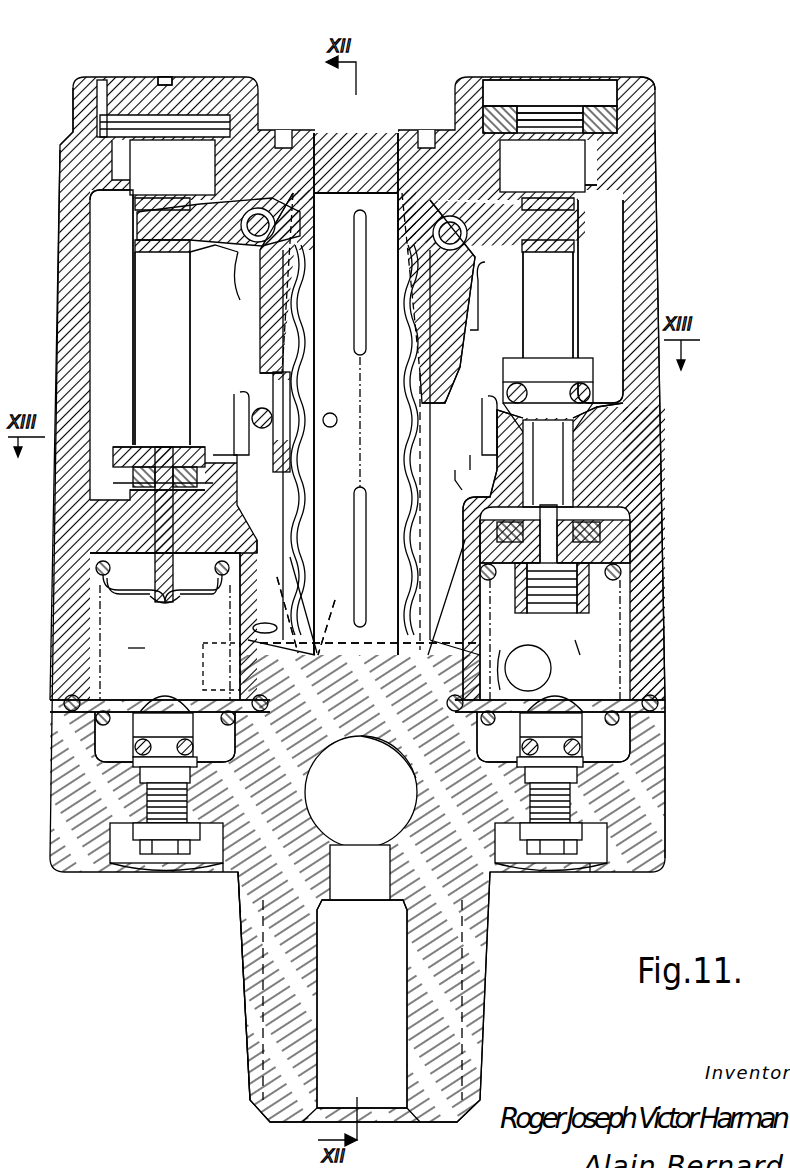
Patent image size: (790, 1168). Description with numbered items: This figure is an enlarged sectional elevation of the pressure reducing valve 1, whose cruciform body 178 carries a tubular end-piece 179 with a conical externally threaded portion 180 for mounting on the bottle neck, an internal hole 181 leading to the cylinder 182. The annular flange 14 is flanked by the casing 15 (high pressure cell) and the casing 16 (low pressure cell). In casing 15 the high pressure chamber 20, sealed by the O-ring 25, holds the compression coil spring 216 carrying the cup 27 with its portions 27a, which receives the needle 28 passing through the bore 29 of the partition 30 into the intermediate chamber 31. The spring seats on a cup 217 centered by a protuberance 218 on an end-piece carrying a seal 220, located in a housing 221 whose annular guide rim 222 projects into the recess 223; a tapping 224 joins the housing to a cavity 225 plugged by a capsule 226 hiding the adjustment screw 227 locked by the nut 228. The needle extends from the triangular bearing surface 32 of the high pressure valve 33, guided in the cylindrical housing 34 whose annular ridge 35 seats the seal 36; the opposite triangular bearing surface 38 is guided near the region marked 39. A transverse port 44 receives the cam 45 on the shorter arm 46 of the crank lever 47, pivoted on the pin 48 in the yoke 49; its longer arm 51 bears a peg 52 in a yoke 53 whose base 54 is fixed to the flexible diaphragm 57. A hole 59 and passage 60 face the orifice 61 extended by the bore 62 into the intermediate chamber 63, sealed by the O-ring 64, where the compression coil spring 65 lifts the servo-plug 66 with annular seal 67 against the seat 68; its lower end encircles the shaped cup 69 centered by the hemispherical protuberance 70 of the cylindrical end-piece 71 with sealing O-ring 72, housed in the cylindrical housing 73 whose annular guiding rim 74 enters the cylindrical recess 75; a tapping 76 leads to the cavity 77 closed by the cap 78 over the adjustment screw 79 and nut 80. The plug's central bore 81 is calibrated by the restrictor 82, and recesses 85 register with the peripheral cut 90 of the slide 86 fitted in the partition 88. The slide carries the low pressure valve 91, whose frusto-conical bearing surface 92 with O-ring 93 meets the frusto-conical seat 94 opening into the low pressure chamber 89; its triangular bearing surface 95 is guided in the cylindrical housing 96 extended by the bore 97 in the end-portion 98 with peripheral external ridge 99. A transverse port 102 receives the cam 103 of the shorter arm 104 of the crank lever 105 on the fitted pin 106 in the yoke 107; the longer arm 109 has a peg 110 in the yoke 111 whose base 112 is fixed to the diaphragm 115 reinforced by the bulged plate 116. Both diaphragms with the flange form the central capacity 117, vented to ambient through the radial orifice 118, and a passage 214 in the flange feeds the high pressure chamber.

The pressure reducing valve 1 is at (167, 78).
The cap slot 39 is at (98, 137).
The casing 15 is at (62, 194).
The triangular bearing surface 38 is at (172, 167).
The yoke 49 is at (283, 130).
The annular flange 14 is at (320, 132).
The yoke 107 is at (425, 130).
The bore 97 is at (503, 80).
The peripheral external ridge 99 is at (640, 80).
The end-portion 98 is at (620, 112).
The cylindrical housing 96 is at (598, 157).
The triangular bearing surface 95 is at (542, 166).
The cam 103 is at (565, 207).
The casing 16 is at (657, 210).
The transverse port 102 is at (565, 240).
The pin 48 is at (276, 222).
The fitted pin 106 is at (432, 230).
The shorter arm 104 is at (482, 262).
The crank lever 105 is at (480, 282).
The cam 45 is at (137, 232).
The transverse port 44 is at (137, 250).
The shorter arm 46 is at (212, 250).
The crank lever 47 is at (232, 272).
The longer arm 51 is at (262, 290).
The intermediate chamber 31 is at (111, 317).
The high pressure valve 33 is at (162, 348).
The central capacity 117 is at (374, 262).
The bulged plate 116 is at (410, 290).
The low pressure valve 91 is at (548, 305).
The low pressure chamber 89 is at (600, 301).
The longer arm 109 is at (468, 335).
The frusto-conical bearing surface 92 is at (548, 365).
The O-ring 93 is at (585, 383).
The frusto-conical seat 94 is at (590, 405).
The peg 110 is at (490, 400).
The peripheral cut 90 is at (548, 425).
The partition 88 is at (625, 430).
The slide 86 is at (570, 470).
The seat 68 is at (615, 525).
The central bore 81 is at (600, 535).
The servo-plug 66 is at (580, 570).
The compression coil spring 65 is at (625, 585).
The restrictor or jet 82 is at (632, 625).
The shaped cup 69 is at (560, 680).
The O-ring 64 is at (645, 695).
The cylindrical recess 75 is at (630, 725).
The sealing O-ring 72 is at (590, 745).
The cylindrical housing 73 is at (585, 772).
The tapping 76 is at (575, 800).
The adjustment screw 79 is at (610, 830).
The cavity 77 is at (520, 865).
The nut 80 is at (550, 865).
The cap 78 is at (590, 868).
The peg 52 is at (258, 412).
The yoke 53 is at (238, 408).
The cylindrical housing 34 is at (222, 452).
The triangular bearing surface 32 is at (120, 445).
The seal 36 is at (150, 472).
The partition 30 is at (110, 495).
The bore 29 is at (135, 530).
The annular ridge 35 is at (175, 498).
The base 54 is at (273, 468).
The radial orifice 118 is at (330, 413).
The yoke 111 is at (469, 467).
The base 112 is at (459, 486).
The annular seal 67 is at (465, 525).
The recesses 85 is at (500, 540).
The compression coil spring 216 is at (98, 570).
The bearings 27a is at (173, 569).
The needle 28 is at (163, 603).
The cup 27 is at (178, 602).
The high pressure chamber 20 is at (165, 626).
The cup 217 is at (135, 650).
The protuberance 218 is at (165, 680).
The passage 214 is at (165, 700).
The passage 60 is at (290, 600).
The hole 59 is at (267, 613).
The flexible diaphragm 57 is at (302, 620).
The orifice 61 is at (335, 627).
The diaphragm 115 is at (346, 590).
The bore 62 is at (405, 630).
The cylindrical end-piece 71 is at (490, 668).
The hemispherical protuberance 70 is at (552, 645).
The intermediate chamber 63 is at (591, 655).
The O-ring 25 is at (52, 700).
The recess 223 is at (95, 724).
The annular guide rim 222 is at (135, 745).
The seal 220 is at (133, 762).
The housing 221 is at (140, 778).
The tapping 224 is at (147, 800).
The adjustment screw 227 is at (125, 832).
The nut 228 is at (90, 872).
The capsule 226 is at (140, 860).
The cavity 225 is at (178, 860).
The cruciform body 178 is at (225, 872).
The cylinder 182 is at (361, 792).
The annular guiding rim 74 is at (414, 762).
The internal hole 181 is at (360, 872).
The tubular end-piece 179 is at (470, 990).
The conical externally threaded portion 180 is at (250, 1033).